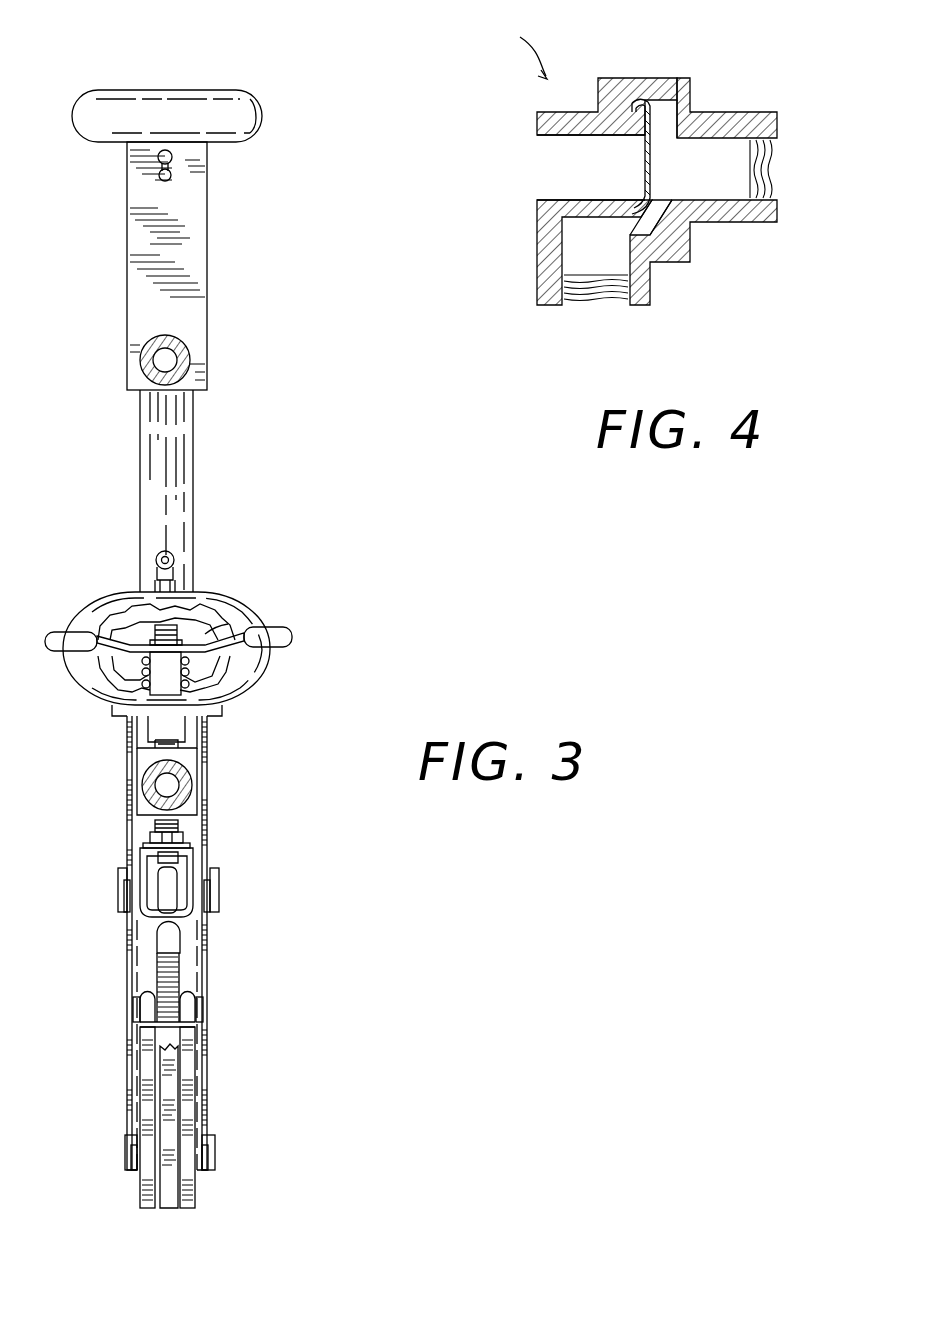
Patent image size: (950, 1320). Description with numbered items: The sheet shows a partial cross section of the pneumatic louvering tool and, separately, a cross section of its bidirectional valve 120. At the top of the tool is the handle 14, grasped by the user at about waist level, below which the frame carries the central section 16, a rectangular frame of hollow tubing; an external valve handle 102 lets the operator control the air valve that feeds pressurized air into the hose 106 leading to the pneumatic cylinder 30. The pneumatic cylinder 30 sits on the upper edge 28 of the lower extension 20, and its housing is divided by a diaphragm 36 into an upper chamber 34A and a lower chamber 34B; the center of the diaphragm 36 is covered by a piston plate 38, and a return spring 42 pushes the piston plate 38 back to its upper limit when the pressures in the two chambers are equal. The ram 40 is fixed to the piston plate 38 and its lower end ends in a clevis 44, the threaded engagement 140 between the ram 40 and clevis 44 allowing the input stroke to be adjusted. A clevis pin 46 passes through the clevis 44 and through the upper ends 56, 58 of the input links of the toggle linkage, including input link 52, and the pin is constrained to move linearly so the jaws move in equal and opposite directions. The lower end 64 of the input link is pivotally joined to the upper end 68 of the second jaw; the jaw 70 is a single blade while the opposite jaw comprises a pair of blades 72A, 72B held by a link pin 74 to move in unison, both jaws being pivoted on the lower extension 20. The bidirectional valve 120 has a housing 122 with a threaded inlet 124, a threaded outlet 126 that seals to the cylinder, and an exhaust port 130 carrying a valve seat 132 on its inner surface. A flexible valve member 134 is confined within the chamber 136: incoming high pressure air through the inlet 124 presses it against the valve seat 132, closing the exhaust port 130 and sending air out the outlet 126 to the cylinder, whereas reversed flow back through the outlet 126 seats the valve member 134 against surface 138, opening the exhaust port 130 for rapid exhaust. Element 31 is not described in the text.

In FIG. 3, the handle 14 is at (266, 103).
In FIG. 3, the external valve handle 102 is at (158, 175).
In FIG. 3, the central section 16 is at (192, 352).
In FIG. 3, the hose 106 is at (182, 462).
In FIG. 3, the bidirectional valve 120 is at (158, 556).
In FIG. 4, the bidirectional valve 120 is at (512, 39).
In FIG. 3, the housing 31 is at (272, 657).
In FIG. 3, the upper chamber 34A is at (132, 630).
In FIG. 3, the lower chamber 34B is at (122, 665).
In FIG. 3, the pneumatic cylinder 30 is at (292, 636).
In FIG. 3, the diaphragm 36 is at (240, 622).
In FIG. 3, the piston plate 38 is at (206, 630).
In FIG. 3, the ram 40 is at (162, 678).
In FIG. 3, the return spring 42 is at (190, 672).
In FIG. 3, the upper edge 28 is at (224, 710).
In FIG. 3, the lower extension 20 is at (206, 785).
In FIG. 3, the threaded engagement 140 is at (155, 826).
In FIG. 3, the clevis 44 is at (192, 848).
In FIG. 3, the upper end of input link 56 is at (150, 860).
In FIG. 3, the upper end of input link 58 is at (188, 868).
In FIG. 3, the clevis pin 46 is at (221, 888).
In FIG. 3, the input link 52 is at (157, 948).
In FIG. 3, the lower end of input link 64 is at (160, 1005).
In FIG. 3, the link pin 74 is at (204, 1006).
In FIG. 3, the upper end of jaw 68 is at (190, 1022).
In FIG. 3, the jaw 70 is at (170, 1080).
In FIG. 3, the blade 72B is at (148, 1100).
In FIG. 3, the blade 72A is at (192, 1095).
In FIG. 4, the housing 122 is at (750, 112).
In FIG. 4, the exhaust port 130 is at (537, 158).
In FIG. 4, the inlet 124 is at (780, 156).
In FIG. 4, the outlet 126 is at (585, 305).
In FIG. 4, the chamber 136 is at (711, 118).
In FIG. 4, the surface 138 is at (672, 226).
In FIG. 4, the valve seat 132 is at (632, 103).
In FIG. 4, the flexible valve member 134 is at (662, 165).